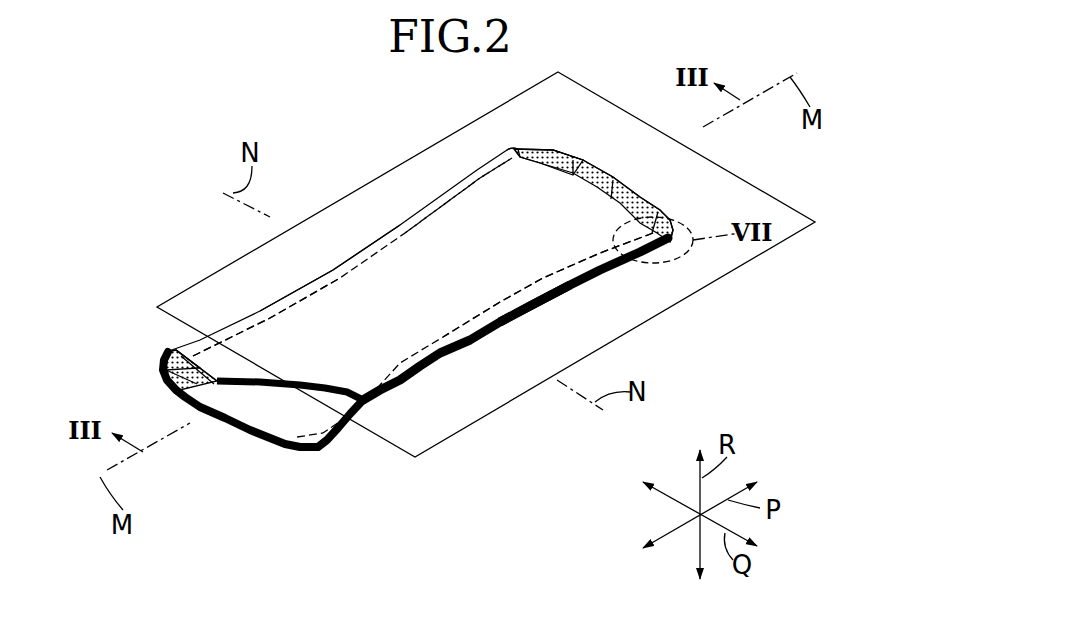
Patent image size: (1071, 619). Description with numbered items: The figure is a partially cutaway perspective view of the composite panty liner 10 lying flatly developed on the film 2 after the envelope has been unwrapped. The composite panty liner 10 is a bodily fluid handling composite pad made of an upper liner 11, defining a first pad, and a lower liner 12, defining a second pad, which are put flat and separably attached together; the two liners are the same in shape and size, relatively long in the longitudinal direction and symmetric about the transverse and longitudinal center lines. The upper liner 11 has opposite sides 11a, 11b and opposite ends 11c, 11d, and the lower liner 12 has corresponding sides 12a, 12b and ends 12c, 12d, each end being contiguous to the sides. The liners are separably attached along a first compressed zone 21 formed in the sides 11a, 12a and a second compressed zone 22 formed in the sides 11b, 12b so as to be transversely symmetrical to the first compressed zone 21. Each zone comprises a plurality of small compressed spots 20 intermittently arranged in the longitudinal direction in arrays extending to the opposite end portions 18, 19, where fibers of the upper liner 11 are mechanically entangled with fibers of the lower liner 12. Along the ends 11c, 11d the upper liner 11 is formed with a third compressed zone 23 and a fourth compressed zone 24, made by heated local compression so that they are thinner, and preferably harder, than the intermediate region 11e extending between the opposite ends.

The film 2 is at (293, 247).
The composite panty liner 10 is at (410, 302).
The upper liner 11 is at (400, 290).
The side of upper liner 11a is at (413, 247).
The side of upper liner 11b is at (483, 293).
The end of upper liner 11c is at (167, 387).
The end of upper liner 11d is at (630, 192).
The intermediate region 11e is at (432, 296).
The lower liner 12 is at (441, 353).
The side of lower liner 12a is at (358, 258).
The side of lower liner 12b is at (470, 343).
The end of lower liner 12c is at (243, 440).
The end of lower liner 12d is at (603, 207).
The end portion 18 is at (183, 353).
The end portion 19 is at (657, 227).
The small compressed spot 20 is at (430, 222).
The first compressed zone 21 is at (482, 195).
The second compressed zone 22 is at (545, 284).
The third compressed zone 23 is at (163, 365).
The fourth compressed zone 24 is at (573, 167).